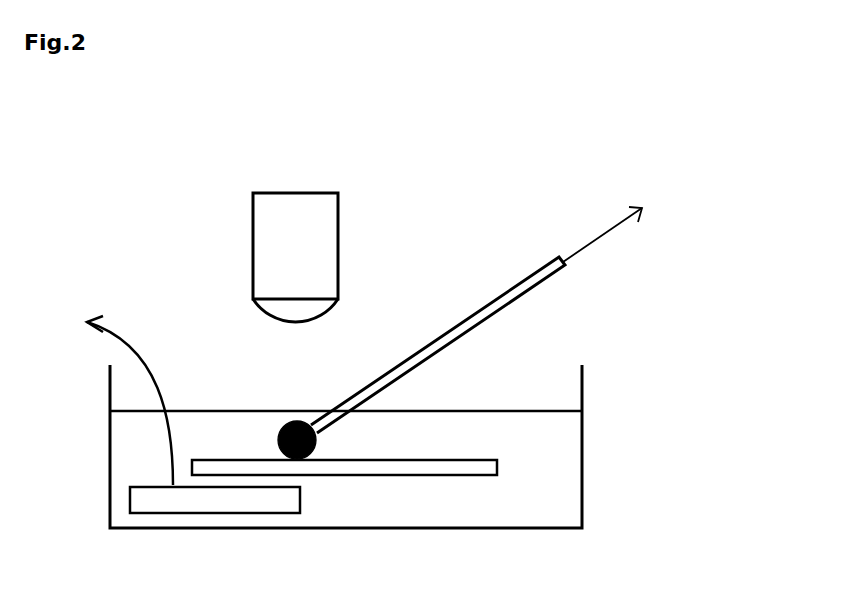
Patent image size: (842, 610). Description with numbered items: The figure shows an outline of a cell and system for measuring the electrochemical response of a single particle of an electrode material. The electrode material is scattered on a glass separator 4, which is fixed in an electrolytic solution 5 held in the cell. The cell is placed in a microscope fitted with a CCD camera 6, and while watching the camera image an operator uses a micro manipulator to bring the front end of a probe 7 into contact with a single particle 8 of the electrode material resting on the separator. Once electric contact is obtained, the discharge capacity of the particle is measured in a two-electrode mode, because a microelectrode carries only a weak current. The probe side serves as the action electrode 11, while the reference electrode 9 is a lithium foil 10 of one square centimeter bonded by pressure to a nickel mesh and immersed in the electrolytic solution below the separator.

The glass separator 4 is at (497, 467).
The electrolytic solution 5 is at (562, 503).
The CCD camera 6 is at (338, 227).
The probe 7 is at (495, 313).
The single particle of electrode material 8 is at (280, 427).
The reference electrode 9 is at (117, 399).
The lithium foil 10 is at (262, 513).
The action electrode 11 is at (627, 230).